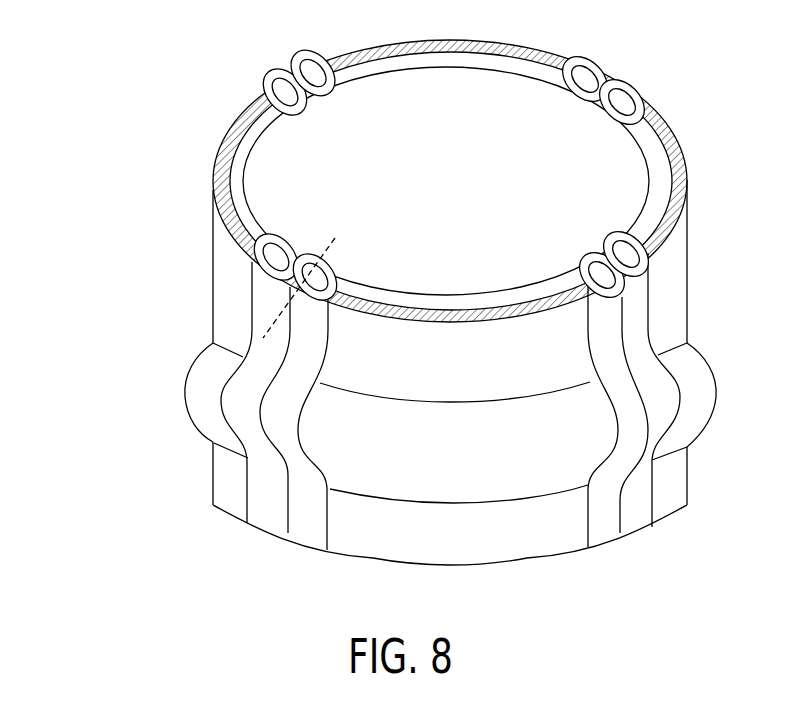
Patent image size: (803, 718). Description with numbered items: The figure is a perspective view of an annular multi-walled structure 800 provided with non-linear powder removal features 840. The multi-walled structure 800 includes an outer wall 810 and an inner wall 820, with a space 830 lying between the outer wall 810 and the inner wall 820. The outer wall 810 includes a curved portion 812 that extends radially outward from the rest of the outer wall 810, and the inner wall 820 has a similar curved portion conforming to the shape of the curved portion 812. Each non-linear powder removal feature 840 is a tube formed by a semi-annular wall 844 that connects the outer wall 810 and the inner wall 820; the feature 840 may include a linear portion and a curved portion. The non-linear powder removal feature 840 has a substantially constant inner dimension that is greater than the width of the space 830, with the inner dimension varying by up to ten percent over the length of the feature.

The multi-walled structure 800 is at (86, 77).
The outer wall 810 is at (250, 121).
The inner wall 820 is at (252, 152).
The space 830 is at (270, 122).
The semi-annular wall 844 is at (348, 267).
The curved portion 812 is at (198, 386).
The non-linear powder removal feature 840 is at (245, 430).